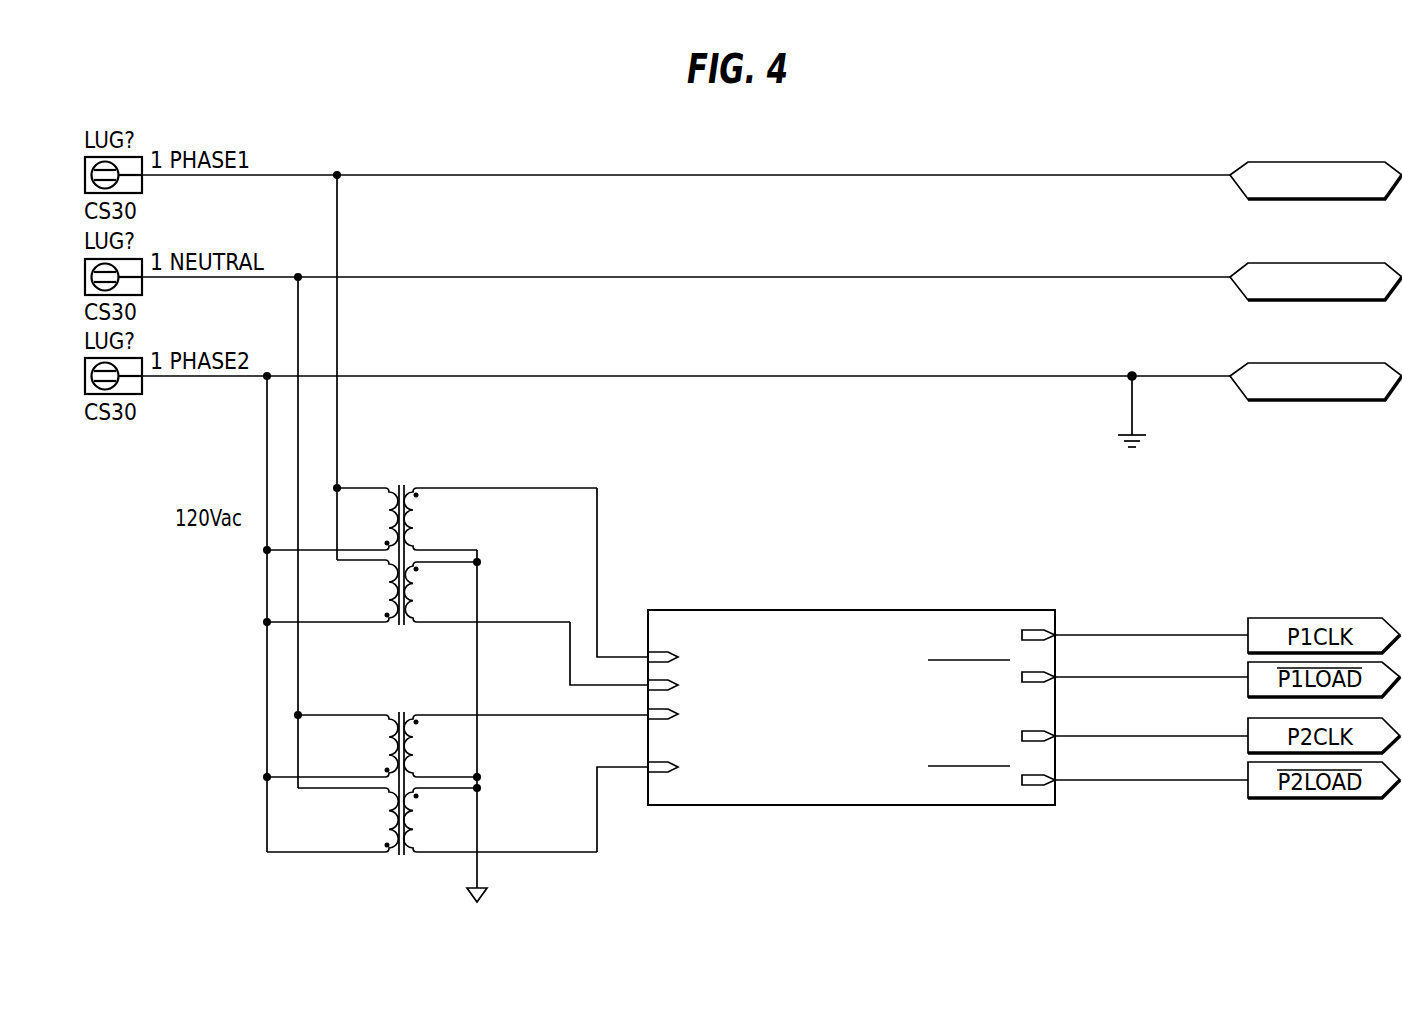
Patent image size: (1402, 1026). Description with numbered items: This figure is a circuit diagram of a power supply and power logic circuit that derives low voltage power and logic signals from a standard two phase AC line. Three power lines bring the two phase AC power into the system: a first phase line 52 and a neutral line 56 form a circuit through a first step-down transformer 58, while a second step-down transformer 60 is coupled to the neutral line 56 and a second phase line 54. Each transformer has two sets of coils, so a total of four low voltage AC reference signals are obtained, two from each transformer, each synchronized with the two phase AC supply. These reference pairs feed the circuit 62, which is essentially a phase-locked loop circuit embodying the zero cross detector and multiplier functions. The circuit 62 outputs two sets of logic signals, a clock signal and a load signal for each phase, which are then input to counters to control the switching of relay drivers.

The phase 1 line 52 is at (405, 175).
The phase 2 line 54 is at (405, 277).
The neutral line 56 is at (405, 376).
The first step-down transformer 58 is at (407, 485).
The second step-down transformer 60 is at (407, 712).
The circuit 62 is at (902, 610).